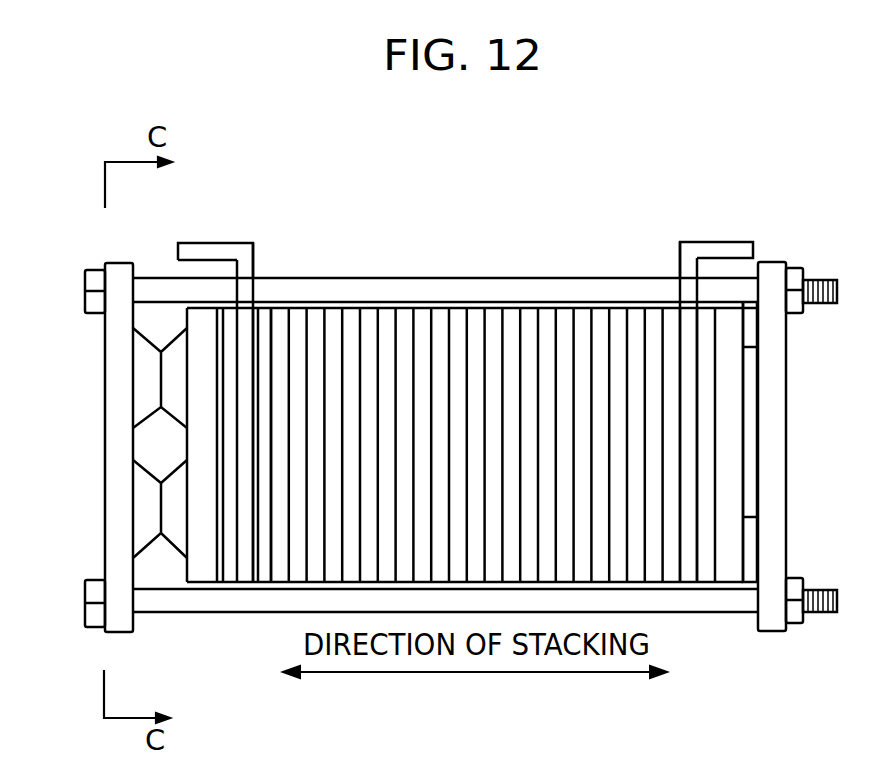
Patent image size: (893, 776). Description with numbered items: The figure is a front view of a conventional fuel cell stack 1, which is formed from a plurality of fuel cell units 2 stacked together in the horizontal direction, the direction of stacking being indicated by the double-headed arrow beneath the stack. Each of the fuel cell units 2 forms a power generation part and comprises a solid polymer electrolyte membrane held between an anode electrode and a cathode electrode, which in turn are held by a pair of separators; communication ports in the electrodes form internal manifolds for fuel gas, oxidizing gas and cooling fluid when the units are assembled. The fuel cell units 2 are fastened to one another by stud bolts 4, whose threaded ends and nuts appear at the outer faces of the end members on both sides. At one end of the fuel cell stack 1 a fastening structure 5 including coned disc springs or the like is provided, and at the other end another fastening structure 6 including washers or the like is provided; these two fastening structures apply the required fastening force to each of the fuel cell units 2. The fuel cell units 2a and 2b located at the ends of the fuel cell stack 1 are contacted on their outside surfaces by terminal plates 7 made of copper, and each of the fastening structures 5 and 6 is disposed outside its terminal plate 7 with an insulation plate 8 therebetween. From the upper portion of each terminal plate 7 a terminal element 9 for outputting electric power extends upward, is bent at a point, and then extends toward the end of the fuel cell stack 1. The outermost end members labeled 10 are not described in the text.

The fuel cell stack 1 is at (446, 355).
The fuel cell units 2 is at (407, 318).
The fuel cell unit 2a is at (671, 316).
The fuel cell unit 2b is at (263, 318).
The stud bolts 4 is at (818, 280).
The fastening structure 5 is at (150, 391).
The fastening structure 6 is at (750, 318).
The terminal plates 7 is at (240, 485).
The insulation plate 8 is at (228, 513).
The terminal element 9 is at (222, 243).
The end plate 10 is at (115, 563).